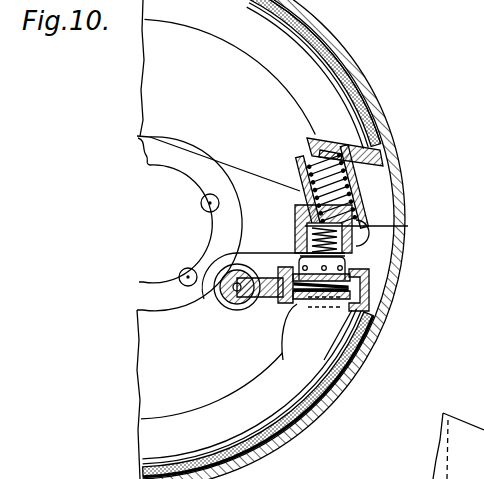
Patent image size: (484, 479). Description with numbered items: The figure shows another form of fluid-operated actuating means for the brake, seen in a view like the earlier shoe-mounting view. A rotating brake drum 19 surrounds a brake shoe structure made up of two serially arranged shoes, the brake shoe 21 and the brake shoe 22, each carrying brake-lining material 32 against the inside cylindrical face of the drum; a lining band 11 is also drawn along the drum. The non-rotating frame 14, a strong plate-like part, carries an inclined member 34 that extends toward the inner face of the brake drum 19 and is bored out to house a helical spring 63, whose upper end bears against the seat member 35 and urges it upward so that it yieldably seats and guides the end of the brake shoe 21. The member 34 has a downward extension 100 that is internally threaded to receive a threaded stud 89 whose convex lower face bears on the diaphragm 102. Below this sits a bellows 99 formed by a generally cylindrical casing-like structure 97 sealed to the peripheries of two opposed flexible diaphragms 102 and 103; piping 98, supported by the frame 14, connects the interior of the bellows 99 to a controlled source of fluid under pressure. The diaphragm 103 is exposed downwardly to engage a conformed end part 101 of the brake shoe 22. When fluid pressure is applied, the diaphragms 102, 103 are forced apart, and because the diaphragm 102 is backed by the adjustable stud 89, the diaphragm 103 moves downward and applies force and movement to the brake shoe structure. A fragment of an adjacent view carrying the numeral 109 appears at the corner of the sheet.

The brake lining 11 is at (389, 98).
The frame 14 is at (225, 160).
The brake drum 19 is at (399, 161).
The brake shoe 21 is at (274, 68).
The brake shoe 22 is at (247, 392).
The brake-lining material 32 is at (332, 48).
The member 34 is at (304, 165).
The seat member 35 is at (314, 136).
The helical spring 63 is at (302, 202).
The threaded stud 89 is at (345, 264).
The casing-like structure 97 is at (369, 275).
The passageway or piping 98 is at (229, 297).
The bellows 99 is at (269, 300).
The downward extension 100 is at (373, 235).
The end part of the brake shoe 101 is at (295, 337).
The diaphragm 102 is at (359, 289).
The diaphragm 103 is at (362, 297).
The adjacent figure element 109 is at (458, 446).